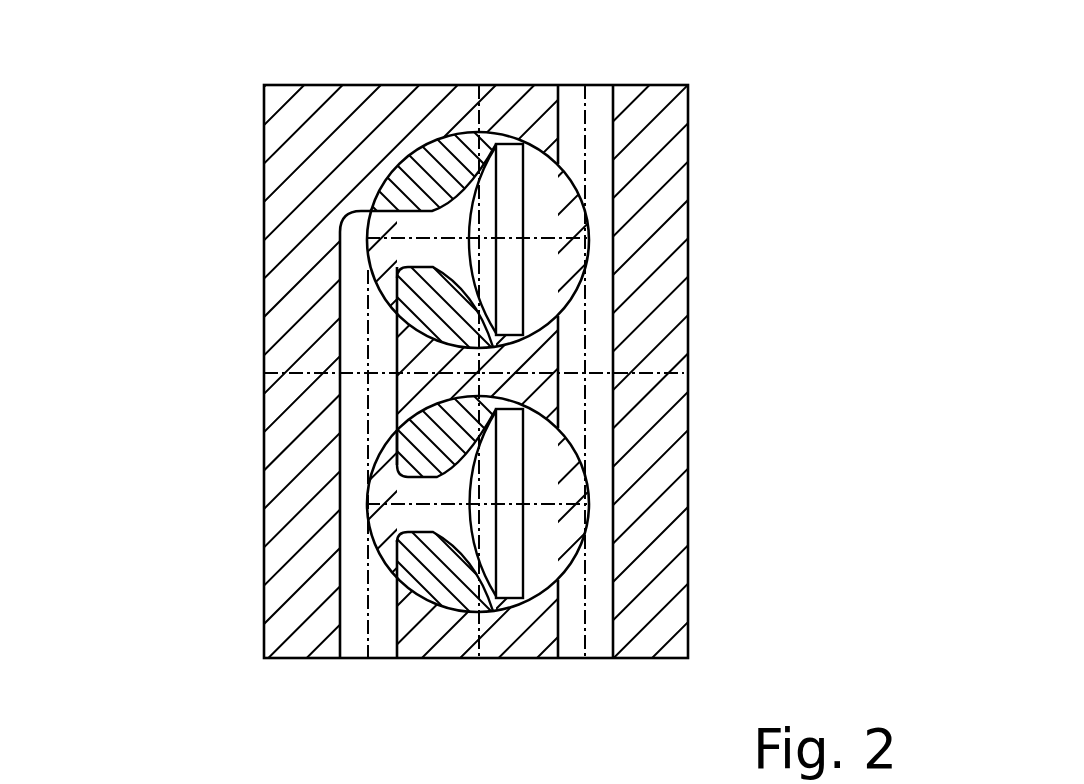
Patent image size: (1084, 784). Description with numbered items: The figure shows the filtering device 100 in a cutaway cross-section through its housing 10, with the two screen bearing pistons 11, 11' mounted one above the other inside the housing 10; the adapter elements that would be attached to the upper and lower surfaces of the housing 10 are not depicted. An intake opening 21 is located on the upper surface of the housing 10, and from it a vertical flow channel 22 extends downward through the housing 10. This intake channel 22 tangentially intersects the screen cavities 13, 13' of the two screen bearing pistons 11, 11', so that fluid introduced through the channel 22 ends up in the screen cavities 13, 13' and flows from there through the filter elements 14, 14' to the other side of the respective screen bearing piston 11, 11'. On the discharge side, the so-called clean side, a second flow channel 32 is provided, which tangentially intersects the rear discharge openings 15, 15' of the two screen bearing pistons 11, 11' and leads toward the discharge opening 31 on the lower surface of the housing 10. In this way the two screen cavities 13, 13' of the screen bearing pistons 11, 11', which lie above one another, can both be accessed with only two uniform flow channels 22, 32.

The filtering device 100 is at (159, 100).
The housing 10 is at (657, 84).
The screen bearing piston 11 is at (533, 310).
The screen bearing piston 11' is at (533, 438).
The screen cavity 13 is at (611, 240).
The screen cavity 13' is at (615, 504).
The filter element 14 is at (676, 239).
The filter element 14' is at (680, 503).
The rear discharge opening 15 is at (384, 169).
The rear discharge opening 15' is at (454, 578).
The intake opening 21 is at (581, 73).
The vertical flow channel 22 is at (590, 163).
The discharge opening 31 is at (371, 676).
The flow channel 32 is at (350, 407).